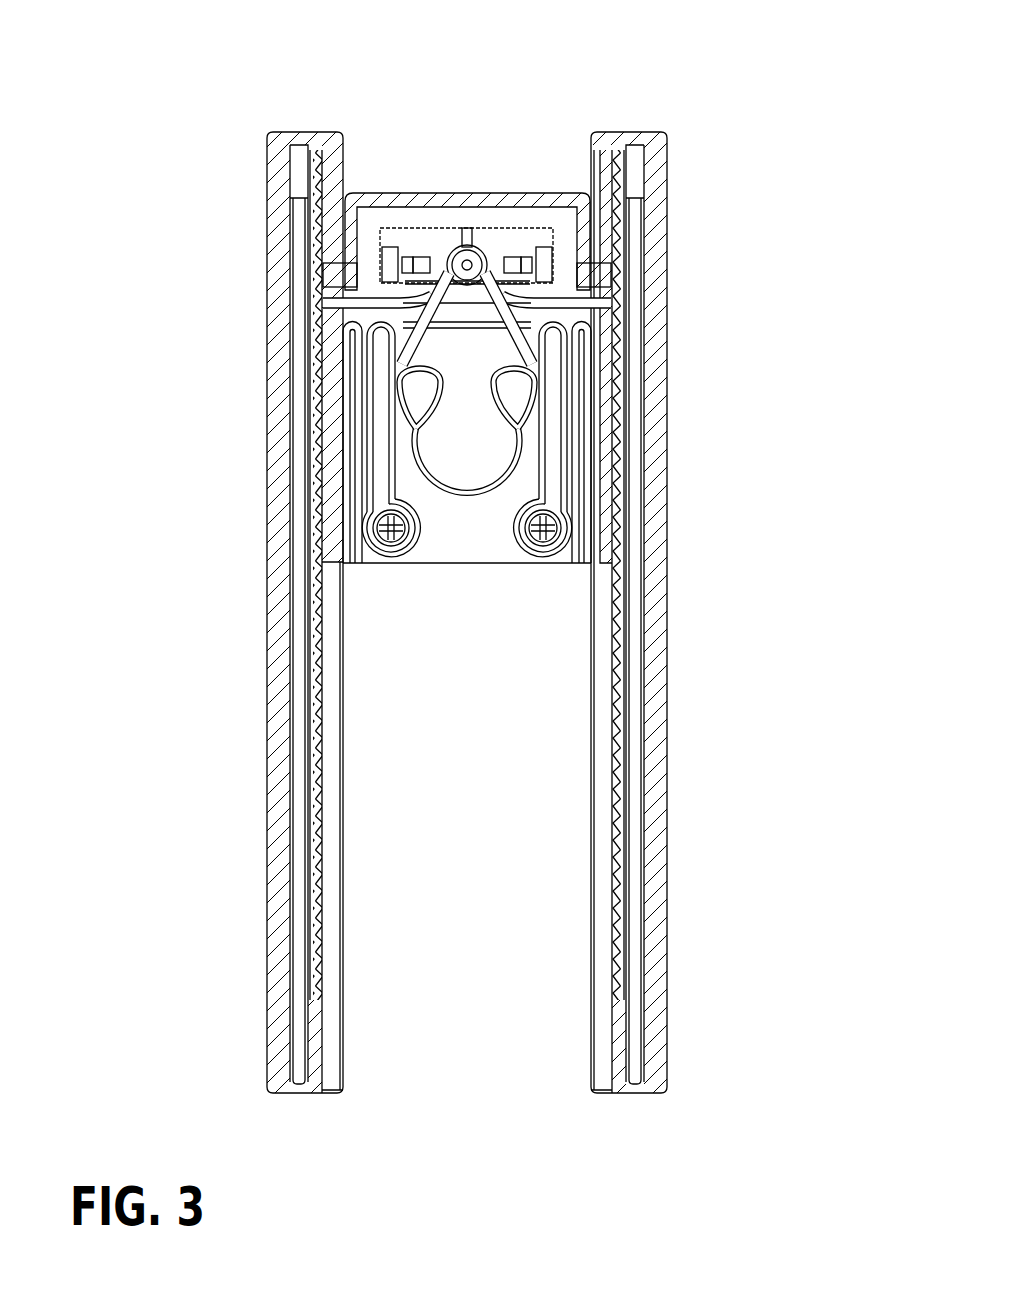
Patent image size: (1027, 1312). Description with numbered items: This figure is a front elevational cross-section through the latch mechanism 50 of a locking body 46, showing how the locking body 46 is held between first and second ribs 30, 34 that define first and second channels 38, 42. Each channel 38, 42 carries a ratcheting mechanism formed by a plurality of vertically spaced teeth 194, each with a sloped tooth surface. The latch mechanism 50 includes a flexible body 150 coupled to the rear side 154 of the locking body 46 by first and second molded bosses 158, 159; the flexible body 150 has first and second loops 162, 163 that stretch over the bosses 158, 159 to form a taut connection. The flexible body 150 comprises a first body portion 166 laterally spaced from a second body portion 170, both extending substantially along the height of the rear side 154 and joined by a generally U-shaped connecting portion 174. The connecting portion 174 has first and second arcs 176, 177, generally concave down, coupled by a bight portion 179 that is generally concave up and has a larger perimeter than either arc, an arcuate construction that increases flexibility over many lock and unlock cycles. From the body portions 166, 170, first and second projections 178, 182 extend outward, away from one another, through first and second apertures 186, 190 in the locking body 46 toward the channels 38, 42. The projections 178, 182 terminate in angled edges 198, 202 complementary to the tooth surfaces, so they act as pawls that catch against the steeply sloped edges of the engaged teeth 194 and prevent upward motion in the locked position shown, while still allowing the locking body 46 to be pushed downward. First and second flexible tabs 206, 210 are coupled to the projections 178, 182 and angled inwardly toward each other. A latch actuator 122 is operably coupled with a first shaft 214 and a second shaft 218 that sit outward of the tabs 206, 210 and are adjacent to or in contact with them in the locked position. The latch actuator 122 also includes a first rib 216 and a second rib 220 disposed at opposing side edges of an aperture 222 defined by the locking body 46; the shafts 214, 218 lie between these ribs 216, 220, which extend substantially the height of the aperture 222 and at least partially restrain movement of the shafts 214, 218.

The first rib 30 is at (653, 1068).
The second rib 34 is at (282, 1068).
The first channel 38 is at (603, 962).
The second channel 42 is at (330, 965).
The locking body 46 is at (456, 88).
The latch mechanism 50 is at (469, 414).
The latch actuator 122 is at (442, 248).
The flexible body 150 is at (523, 366).
The rear side 154 is at (468, 505).
The first molded boss 158 is at (395, 548).
The second molded boss 159 is at (545, 548).
The first loop 162 is at (403, 556).
The second loop 163 is at (530, 556).
The first body portion 166 is at (550, 470).
The second body portion 170 is at (385, 490).
The connecting portion 174 is at (470, 482).
The first arc 176 is at (427, 372).
The second arc 177 is at (503, 378).
The first projection 178 is at (612, 270).
The bight portion 179 is at (457, 494).
The second projection 182 is at (320, 296).
The first aperture 186 is at (614, 296).
The second aperture 190 is at (340, 305).
The teeth 194 is at (300, 236).
The first angled edge 198 is at (622, 318).
The second angled edge 202 is at (320, 325).
The first flexible tab 206 is at (500, 247).
The second flexible tab 210 is at (425, 266).
The first shaft 214 is at (526, 260).
The first rib 216 is at (548, 260).
The second shaft 218 is at (403, 256).
The second rib 220 is at (390, 246).
The aperture 222 is at (490, 236).